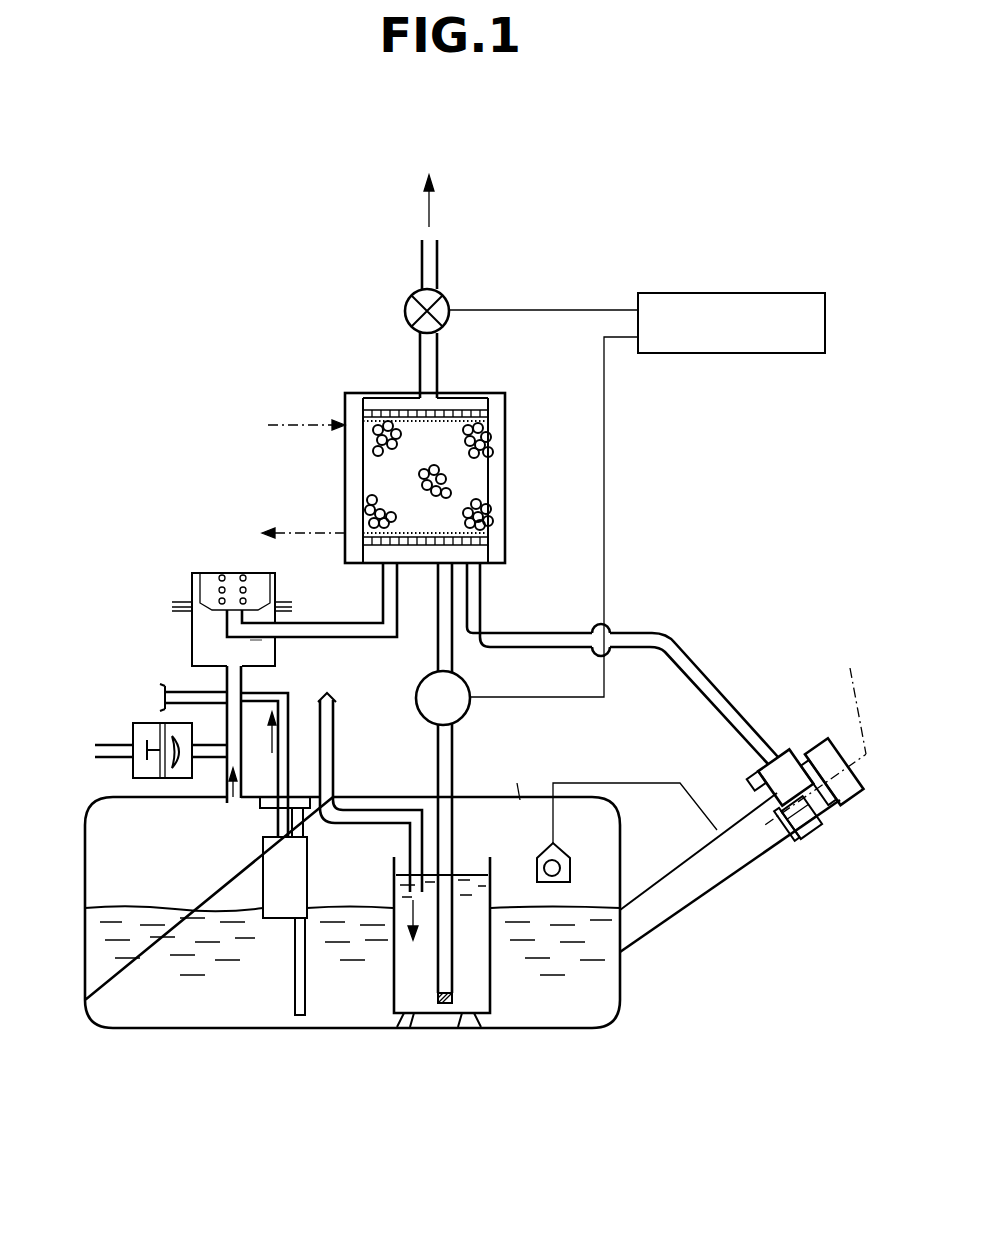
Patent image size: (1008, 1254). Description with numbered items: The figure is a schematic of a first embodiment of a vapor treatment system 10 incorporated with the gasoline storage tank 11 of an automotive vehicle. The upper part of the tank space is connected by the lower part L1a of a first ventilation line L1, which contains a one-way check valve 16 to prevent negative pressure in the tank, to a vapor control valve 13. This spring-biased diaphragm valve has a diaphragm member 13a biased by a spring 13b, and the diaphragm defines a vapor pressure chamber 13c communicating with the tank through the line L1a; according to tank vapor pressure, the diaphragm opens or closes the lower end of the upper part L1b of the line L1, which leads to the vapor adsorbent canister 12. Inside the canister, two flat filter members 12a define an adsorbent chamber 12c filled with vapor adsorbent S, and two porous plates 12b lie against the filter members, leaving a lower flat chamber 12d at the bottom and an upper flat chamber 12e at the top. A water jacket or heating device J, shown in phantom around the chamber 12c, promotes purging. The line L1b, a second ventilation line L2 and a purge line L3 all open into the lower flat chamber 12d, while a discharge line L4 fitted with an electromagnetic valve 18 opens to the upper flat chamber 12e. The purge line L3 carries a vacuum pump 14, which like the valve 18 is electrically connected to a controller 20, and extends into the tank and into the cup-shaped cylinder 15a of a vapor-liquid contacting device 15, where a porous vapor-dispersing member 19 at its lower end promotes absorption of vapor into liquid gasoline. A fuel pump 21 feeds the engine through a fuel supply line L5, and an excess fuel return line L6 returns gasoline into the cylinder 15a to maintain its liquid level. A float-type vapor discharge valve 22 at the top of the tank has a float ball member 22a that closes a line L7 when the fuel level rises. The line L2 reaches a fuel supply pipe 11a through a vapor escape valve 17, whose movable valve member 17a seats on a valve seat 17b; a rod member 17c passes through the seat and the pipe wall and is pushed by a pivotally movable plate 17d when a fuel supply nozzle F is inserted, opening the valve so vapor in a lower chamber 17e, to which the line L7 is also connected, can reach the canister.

The vapor treatment system 10 is at (570, 233).
The gasoline storage tank 11 is at (240, 1012).
The fuel supply pipe 11a is at (747, 867).
The vapor adsorbent canister 12 is at (490, 478).
The flat filter member 12a is at (385, 412).
The porous plate 12b is at (460, 410).
The adsorbent chamber 12c is at (360, 483).
The lower flat chamber 12d is at (423, 562).
The upper flat chamber 12e is at (440, 396).
The vapor control valve 13 is at (192, 625).
The diaphragm member 13a is at (221, 590).
The spring 13b is at (222, 589).
The vapor pressure chamber 13c is at (263, 653).
The vacuum pump 14 is at (465, 710).
The vapor-liquid contacting device 15 is at (491, 983).
The cup-shaped cylinder 15a is at (393, 975).
The one-way check valve 16 is at (143, 768).
The vapor escape valve 17 is at (793, 757).
The movable valve member 17a is at (762, 770).
The valve seat 17b is at (833, 800).
The rod member 17c is at (762, 827).
The pivotally movable plate 17d is at (813, 813).
The lower chamber 17e is at (750, 795).
The electromagnetic valve 18 is at (405, 305).
The porous vapor-dispersing member 19 is at (444, 1005).
The controller 20 is at (740, 293).
The fuel pump 21 is at (282, 860).
The vapor discharge valve 22 is at (572, 860).
The float ball member 22a is at (514, 778).
The first ventilation line L1 is at (310, 622).
The lower part of first ventilation line L1a is at (225, 732).
The upper part of first ventilation line L1b is at (340, 632).
The second ventilation line L2 is at (683, 650).
The purge line L3 is at (468, 604).
The discharge line L4 is at (437, 265).
The fuel supply line L5 is at (178, 688).
The excess fuel return line L6 is at (333, 740).
The line L7 is at (620, 783).
The vapor adsorbent S is at (442, 472).
The water jacket J is at (345, 450).
The fuel supply nozzle F is at (815, 733).